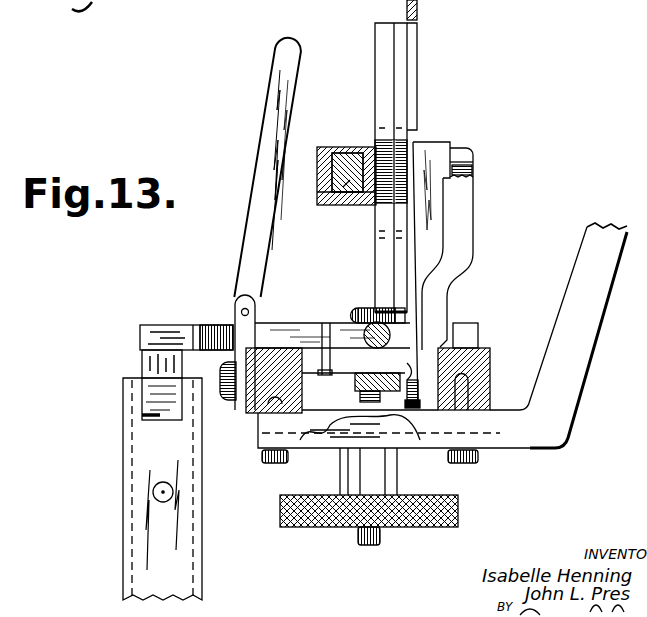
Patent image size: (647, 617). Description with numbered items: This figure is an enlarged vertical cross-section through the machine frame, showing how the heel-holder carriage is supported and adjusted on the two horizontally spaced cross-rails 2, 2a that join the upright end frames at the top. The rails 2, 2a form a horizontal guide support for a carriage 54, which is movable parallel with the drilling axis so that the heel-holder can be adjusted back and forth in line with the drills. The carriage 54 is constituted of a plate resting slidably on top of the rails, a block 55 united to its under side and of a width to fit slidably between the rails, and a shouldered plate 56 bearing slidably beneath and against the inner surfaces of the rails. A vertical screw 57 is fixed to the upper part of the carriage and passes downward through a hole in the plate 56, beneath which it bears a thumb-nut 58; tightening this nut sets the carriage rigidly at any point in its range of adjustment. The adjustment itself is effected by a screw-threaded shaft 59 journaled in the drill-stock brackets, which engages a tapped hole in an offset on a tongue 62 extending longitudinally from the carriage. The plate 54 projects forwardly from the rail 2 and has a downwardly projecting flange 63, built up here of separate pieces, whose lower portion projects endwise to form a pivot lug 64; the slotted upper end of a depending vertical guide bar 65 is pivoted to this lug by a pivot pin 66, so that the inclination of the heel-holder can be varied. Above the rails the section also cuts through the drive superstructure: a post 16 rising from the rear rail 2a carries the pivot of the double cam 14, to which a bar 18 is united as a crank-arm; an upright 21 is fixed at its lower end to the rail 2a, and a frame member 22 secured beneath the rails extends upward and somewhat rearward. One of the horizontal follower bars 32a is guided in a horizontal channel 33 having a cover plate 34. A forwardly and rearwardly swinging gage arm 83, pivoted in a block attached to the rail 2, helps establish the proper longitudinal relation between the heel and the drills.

The cross-rail 2 is at (257, 397).
The rear cross-rail 2a is at (492, 354).
The double cam 14 is at (394, 95).
The post 16 is at (438, 150).
The bar 18 is at (418, 8).
The upright 21 is at (458, 220).
The frame member 22 is at (580, 278).
The horizontal bar 32a is at (343, 163).
The horizontal channel 33 is at (333, 206).
The cover plate 34 is at (342, 152).
The carriage 54 is at (232, 333).
The block 55 is at (308, 360).
The shouldered plate 56 is at (307, 420).
The vertical screw 57 is at (362, 545).
The thumb-nut 58 is at (441, 522).
The shaft 59 is at (363, 335).
The tongue 62 is at (355, 382).
The flange 63 is at (157, 367).
The pivot lug 64 is at (142, 416).
The guide bar 65 is at (133, 508).
The pivot pin 66 is at (140, 390).
The gage arm 83 is at (262, 153).